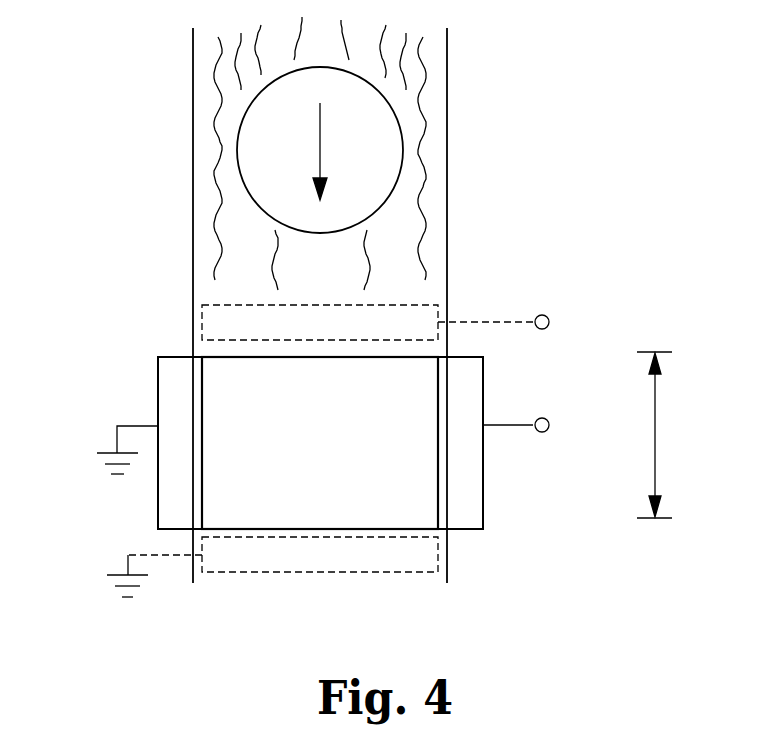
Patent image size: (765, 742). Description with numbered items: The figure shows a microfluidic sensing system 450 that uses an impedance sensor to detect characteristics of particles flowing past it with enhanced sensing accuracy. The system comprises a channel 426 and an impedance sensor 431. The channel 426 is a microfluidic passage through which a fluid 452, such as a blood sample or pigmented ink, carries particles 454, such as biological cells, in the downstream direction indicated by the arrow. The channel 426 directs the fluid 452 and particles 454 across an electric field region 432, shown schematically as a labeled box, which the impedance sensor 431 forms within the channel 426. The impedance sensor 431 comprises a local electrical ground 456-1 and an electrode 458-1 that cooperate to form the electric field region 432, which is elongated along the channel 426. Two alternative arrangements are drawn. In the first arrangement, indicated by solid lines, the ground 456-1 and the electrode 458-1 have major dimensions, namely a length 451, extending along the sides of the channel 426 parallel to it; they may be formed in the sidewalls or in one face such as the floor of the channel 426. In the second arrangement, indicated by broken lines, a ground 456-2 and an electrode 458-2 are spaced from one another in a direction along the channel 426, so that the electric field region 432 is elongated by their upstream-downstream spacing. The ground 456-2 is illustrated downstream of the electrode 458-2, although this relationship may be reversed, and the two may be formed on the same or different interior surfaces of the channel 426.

The microfluidic sensing system 450 is at (127, 172).
The channel 426 is at (447, 148).
The fluid 452 is at (422, 205).
The particles 454 is at (388, 102).
The impedance sensor 431 is at (157, 357).
The electric field region 432 is at (438, 528).
The local electrical ground 456-1 is at (158, 383).
The ground 456-2 is at (412, 573).
The electrode 458-1 is at (483, 383).
The electrode 458-2 is at (438, 311).
The length L 451 is at (657, 432).